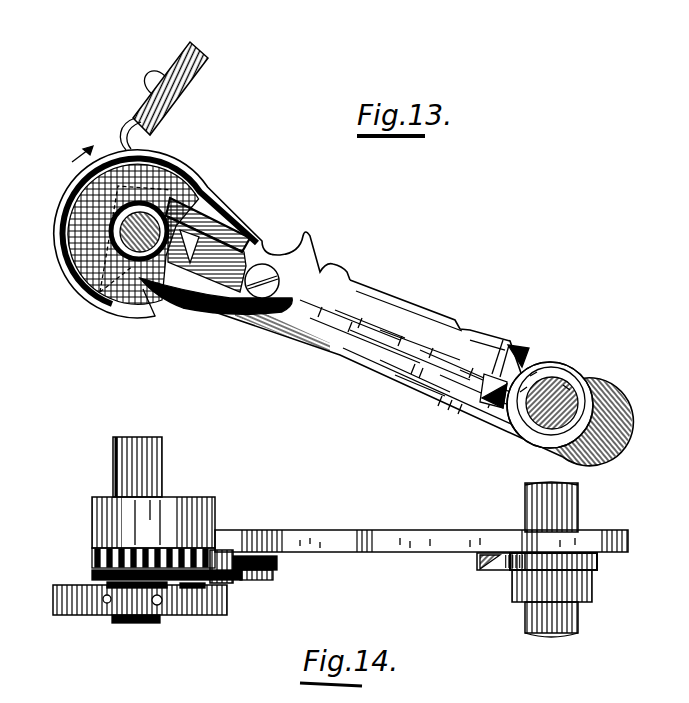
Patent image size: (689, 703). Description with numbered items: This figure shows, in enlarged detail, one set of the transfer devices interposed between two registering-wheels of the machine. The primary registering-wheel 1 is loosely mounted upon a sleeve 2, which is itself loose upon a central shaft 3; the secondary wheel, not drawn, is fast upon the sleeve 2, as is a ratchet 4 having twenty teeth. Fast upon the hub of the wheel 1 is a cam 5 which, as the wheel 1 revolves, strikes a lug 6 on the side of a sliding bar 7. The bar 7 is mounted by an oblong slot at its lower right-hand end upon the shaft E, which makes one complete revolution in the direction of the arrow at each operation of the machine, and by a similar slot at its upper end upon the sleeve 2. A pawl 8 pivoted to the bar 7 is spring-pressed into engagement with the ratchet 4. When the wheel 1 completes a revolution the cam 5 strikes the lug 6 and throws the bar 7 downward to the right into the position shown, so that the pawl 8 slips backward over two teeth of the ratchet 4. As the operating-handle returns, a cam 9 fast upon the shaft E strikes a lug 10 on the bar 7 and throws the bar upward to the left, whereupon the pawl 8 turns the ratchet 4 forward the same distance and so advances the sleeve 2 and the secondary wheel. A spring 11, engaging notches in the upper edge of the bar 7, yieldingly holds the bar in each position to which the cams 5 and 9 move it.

In FIG. 13, the primary registering-wheel 1 is at (63, 245).
In FIG. 14, the primary registering-wheel 1 is at (90, 613).
In FIG. 14, the sleeve 2 is at (158, 470).
In FIG. 13, the central shaft 3 is at (112, 212).
In FIG. 13, the ratchet 4 is at (100, 292).
In FIG. 14, the ratchet 4 is at (93, 557).
In FIG. 13, the cam 5 is at (195, 258).
In FIG. 14, the cam 5 is at (203, 587).
In FIG. 13, the lug 6 is at (248, 243).
In FIG. 14, the lug 6 is at (233, 550).
In FIG. 13, the sliding bar 7 is at (378, 297).
In FIG. 14, the sliding bar 7 is at (390, 533).
In FIG. 13, the pawl 8 is at (206, 309).
In FIG. 13, the cam 9 is at (527, 351).
In FIG. 14, the cam 9 is at (517, 550).
In FIG. 13, the lug 10 is at (497, 343).
In FIG. 14, the lug 10 is at (497, 568).
In FIG. 13, the spring 11 is at (205, 205).
In FIG. 13, the shaft E is at (571, 380).
In FIG. 14, the shaft E is at (563, 632).